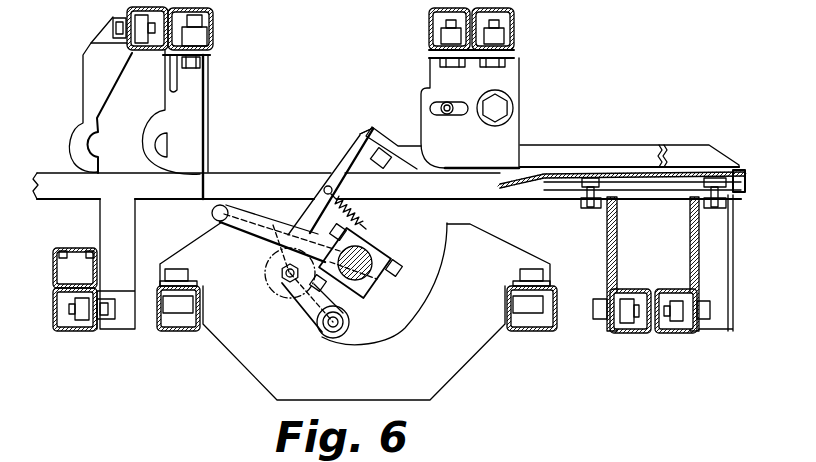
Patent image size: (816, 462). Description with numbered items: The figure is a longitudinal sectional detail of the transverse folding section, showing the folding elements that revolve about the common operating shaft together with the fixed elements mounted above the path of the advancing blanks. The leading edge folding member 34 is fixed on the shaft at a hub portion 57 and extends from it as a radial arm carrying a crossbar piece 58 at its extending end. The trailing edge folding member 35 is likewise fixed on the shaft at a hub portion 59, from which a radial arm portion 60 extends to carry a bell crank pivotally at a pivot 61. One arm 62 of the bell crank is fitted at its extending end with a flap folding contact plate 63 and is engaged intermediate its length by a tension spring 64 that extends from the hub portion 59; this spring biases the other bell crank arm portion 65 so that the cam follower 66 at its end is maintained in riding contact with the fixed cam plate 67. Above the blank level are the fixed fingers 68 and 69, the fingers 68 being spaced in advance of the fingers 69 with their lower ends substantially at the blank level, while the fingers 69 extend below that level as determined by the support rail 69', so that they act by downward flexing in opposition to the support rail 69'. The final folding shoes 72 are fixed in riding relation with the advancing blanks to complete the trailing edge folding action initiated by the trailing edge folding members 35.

The leading edge folding member 34 is at (246, 233).
The trailing edge folding member 35 is at (359, 132).
The hub portion 57 is at (367, 287).
The crossbar piece 58 is at (212, 214).
The hub portion 59 is at (392, 280).
The radial arm portion 60 is at (271, 282).
The bell crank pivot 61 is at (291, 285).
The bell crank arm 62 is at (351, 152).
The flap folding contact plate 63 is at (383, 133).
The tension spring 64 is at (354, 227).
The bell crank arm portion 65 is at (312, 318).
The cam follower 66 is at (351, 323).
The fixed cam plate 67 is at (236, 357).
The fixed finger 68 is at (82, 99).
The fixed finger 69 is at (167, 124).
The support rail 69' is at (136, 149).
The final folding shoe 72 is at (509, 135).